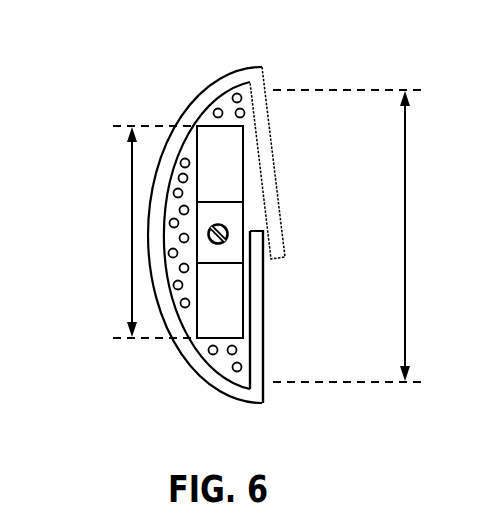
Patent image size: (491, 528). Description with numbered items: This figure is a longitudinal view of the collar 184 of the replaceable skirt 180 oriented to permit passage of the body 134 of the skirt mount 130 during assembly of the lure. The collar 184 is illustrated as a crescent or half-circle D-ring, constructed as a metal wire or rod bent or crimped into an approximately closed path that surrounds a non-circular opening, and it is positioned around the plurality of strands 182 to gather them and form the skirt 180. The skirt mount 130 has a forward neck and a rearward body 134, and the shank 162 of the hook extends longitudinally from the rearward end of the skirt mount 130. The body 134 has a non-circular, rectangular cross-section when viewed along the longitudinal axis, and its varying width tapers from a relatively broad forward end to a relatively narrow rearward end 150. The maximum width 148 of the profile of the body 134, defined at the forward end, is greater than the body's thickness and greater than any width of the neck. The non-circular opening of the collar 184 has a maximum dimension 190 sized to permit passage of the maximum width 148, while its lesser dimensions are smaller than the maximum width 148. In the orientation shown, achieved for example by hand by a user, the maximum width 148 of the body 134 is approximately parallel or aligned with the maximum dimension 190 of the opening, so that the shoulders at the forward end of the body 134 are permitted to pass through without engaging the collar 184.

The skirt mount 130 is at (258, 200).
The body 134 is at (210, 325).
The maximum width 148 is at (131, 205).
The rearward end 150 is at (233, 248).
The shank 162 is at (218, 224).
The replaceable skirt 180 is at (296, 84).
The strands 182 is at (237, 93).
The collar 184 is at (196, 102).
The maximum dimension 190 is at (404, 204).